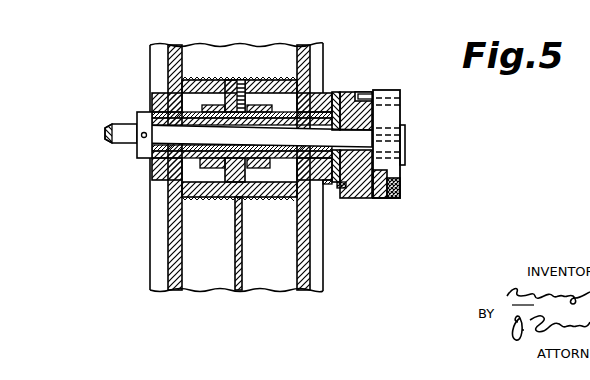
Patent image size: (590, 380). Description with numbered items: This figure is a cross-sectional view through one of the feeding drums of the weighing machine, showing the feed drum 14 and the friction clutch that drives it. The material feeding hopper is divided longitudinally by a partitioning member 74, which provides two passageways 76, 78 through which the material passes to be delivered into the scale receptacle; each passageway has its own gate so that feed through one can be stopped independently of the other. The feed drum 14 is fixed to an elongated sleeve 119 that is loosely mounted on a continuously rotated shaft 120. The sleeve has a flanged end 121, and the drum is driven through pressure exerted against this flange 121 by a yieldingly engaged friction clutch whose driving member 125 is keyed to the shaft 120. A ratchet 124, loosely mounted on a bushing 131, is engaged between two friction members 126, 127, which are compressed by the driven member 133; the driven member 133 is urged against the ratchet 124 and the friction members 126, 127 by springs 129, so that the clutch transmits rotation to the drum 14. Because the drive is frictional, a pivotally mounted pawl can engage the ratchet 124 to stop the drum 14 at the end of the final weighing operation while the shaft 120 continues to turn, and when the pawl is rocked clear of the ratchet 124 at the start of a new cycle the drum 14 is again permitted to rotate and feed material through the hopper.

The feed drum 14 is at (203, 78).
The partitioning member 74 is at (236, 268).
The passageway 76 is at (200, 262).
The passageway 78 is at (269, 262).
The elongated sleeve 119 is at (182, 187).
The shaft 120 is at (108, 123).
The flange 121 is at (326, 184).
The ratchet 124 is at (341, 190).
The driving member 125 is at (390, 118).
The friction member 126 is at (334, 95).
The friction member 127 is at (354, 93).
The springs 129 is at (385, 199).
The bushing 131 is at (239, 189).
The driven member 133 is at (388, 158).